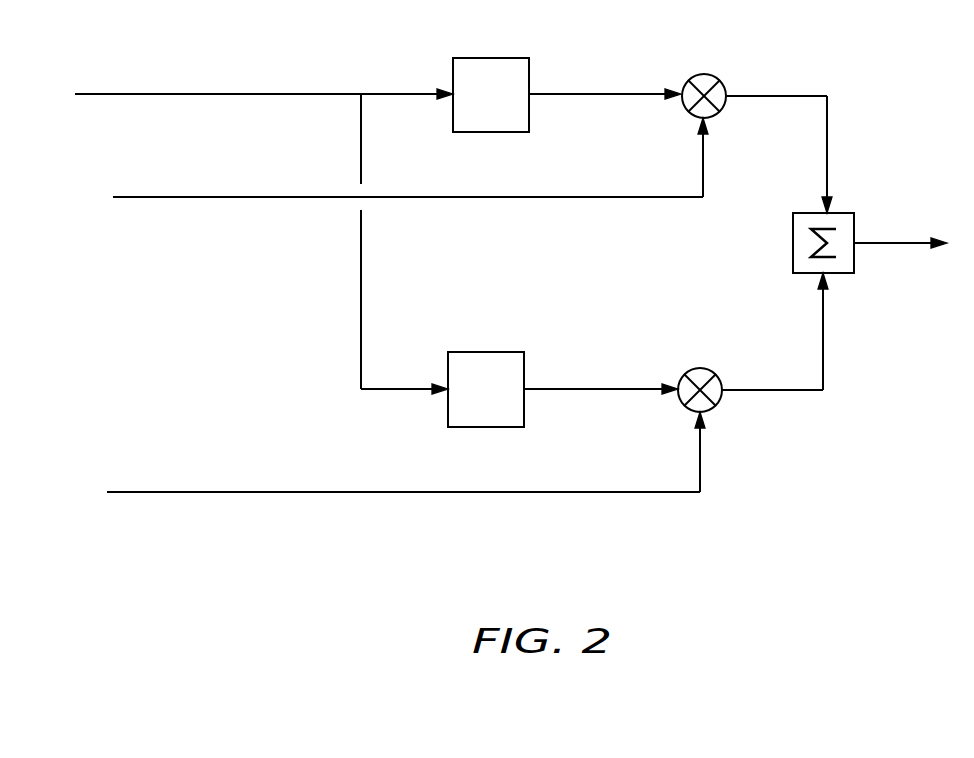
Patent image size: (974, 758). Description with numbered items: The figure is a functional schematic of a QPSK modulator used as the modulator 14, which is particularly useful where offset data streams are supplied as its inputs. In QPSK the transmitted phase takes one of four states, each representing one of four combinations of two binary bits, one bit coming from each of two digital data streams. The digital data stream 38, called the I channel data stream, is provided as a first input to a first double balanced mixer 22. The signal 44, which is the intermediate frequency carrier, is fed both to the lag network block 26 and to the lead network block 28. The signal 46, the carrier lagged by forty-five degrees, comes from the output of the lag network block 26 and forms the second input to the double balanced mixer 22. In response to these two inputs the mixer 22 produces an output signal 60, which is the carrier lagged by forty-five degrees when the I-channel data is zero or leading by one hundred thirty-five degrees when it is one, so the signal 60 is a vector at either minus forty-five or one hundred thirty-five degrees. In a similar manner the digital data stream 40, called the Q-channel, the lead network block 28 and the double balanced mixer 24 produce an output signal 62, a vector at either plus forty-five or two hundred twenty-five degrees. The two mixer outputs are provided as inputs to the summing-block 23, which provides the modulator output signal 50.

The modulator 14 is at (724, 432).
The first double balanced mixer 22 is at (713, 78).
The summing-block 23 is at (848, 213).
The double balanced mixer 24 is at (710, 371).
The lag network block 26 is at (511, 58).
The lead network block 28 is at (508, 352).
The digital data stream 38 is at (434, 197).
The digital data stream 40 is at (278, 492).
The signal 44 is at (243, 94).
The signal 46 is at (588, 94).
The modulator output signal 50 is at (897, 248).
The output signal 60 is at (829, 116).
The output signal 62 is at (825, 366).